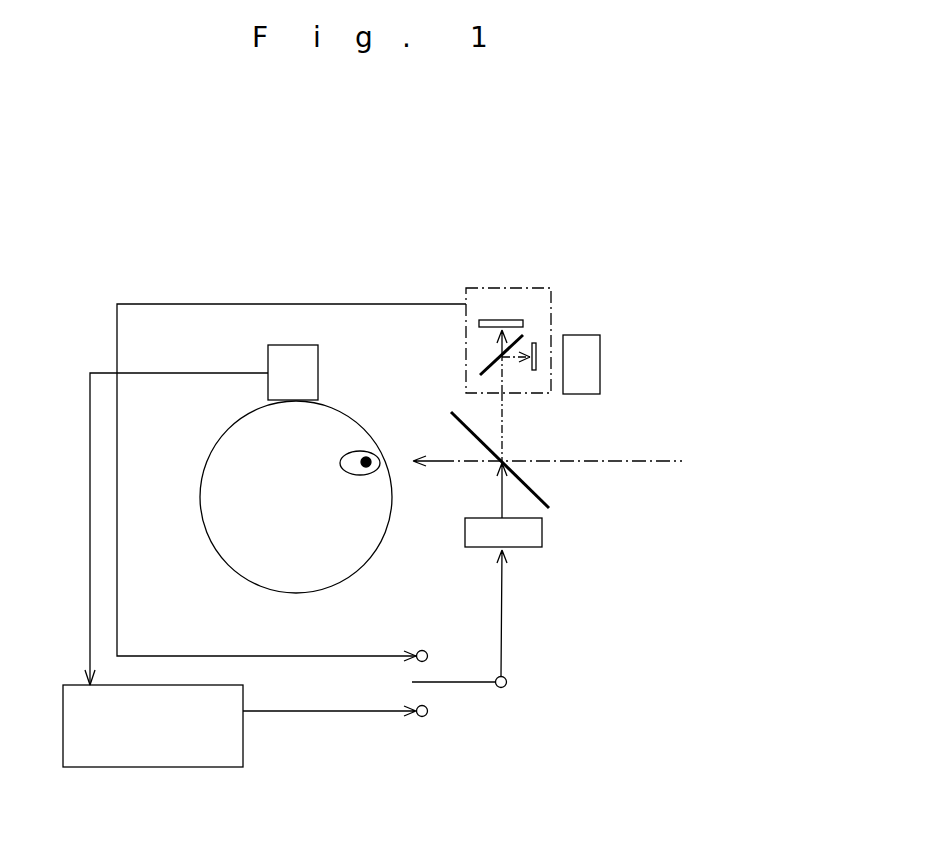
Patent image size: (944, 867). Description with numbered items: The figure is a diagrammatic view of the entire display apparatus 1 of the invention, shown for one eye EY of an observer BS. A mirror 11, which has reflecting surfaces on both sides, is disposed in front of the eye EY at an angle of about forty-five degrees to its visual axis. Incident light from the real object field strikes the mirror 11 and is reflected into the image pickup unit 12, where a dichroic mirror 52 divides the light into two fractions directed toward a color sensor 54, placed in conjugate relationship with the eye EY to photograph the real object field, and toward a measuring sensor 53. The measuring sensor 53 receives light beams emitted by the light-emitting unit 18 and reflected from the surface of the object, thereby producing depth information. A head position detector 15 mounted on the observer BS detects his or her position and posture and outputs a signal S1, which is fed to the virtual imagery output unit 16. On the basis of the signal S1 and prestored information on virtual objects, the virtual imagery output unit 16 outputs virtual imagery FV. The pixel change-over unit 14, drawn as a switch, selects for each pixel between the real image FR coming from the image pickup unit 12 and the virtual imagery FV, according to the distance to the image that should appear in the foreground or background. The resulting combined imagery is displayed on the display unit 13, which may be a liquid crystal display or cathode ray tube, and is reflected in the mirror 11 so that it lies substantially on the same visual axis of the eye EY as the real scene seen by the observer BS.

The apparatus 1 is at (108, 218).
The mirror 11 is at (525, 478).
The image pickup unit 12 is at (549, 288).
The display unit 13 is at (542, 540).
The pixel change-over unit 14 is at (472, 696).
The head position detector 15 is at (288, 345).
The virtual imagery output unit 16 is at (145, 767).
The light-emitting unit 18 is at (600, 365).
The dichroic mirror 52 is at (485, 367).
The measuring sensor 53 is at (537, 349).
The color sensor 54 is at (487, 329).
The signal S1 is at (88, 422).
The eye EY is at (343, 456).
The observer BS is at (272, 517).
The real image FR is at (168, 656).
The virtual imagery FV is at (290, 712).